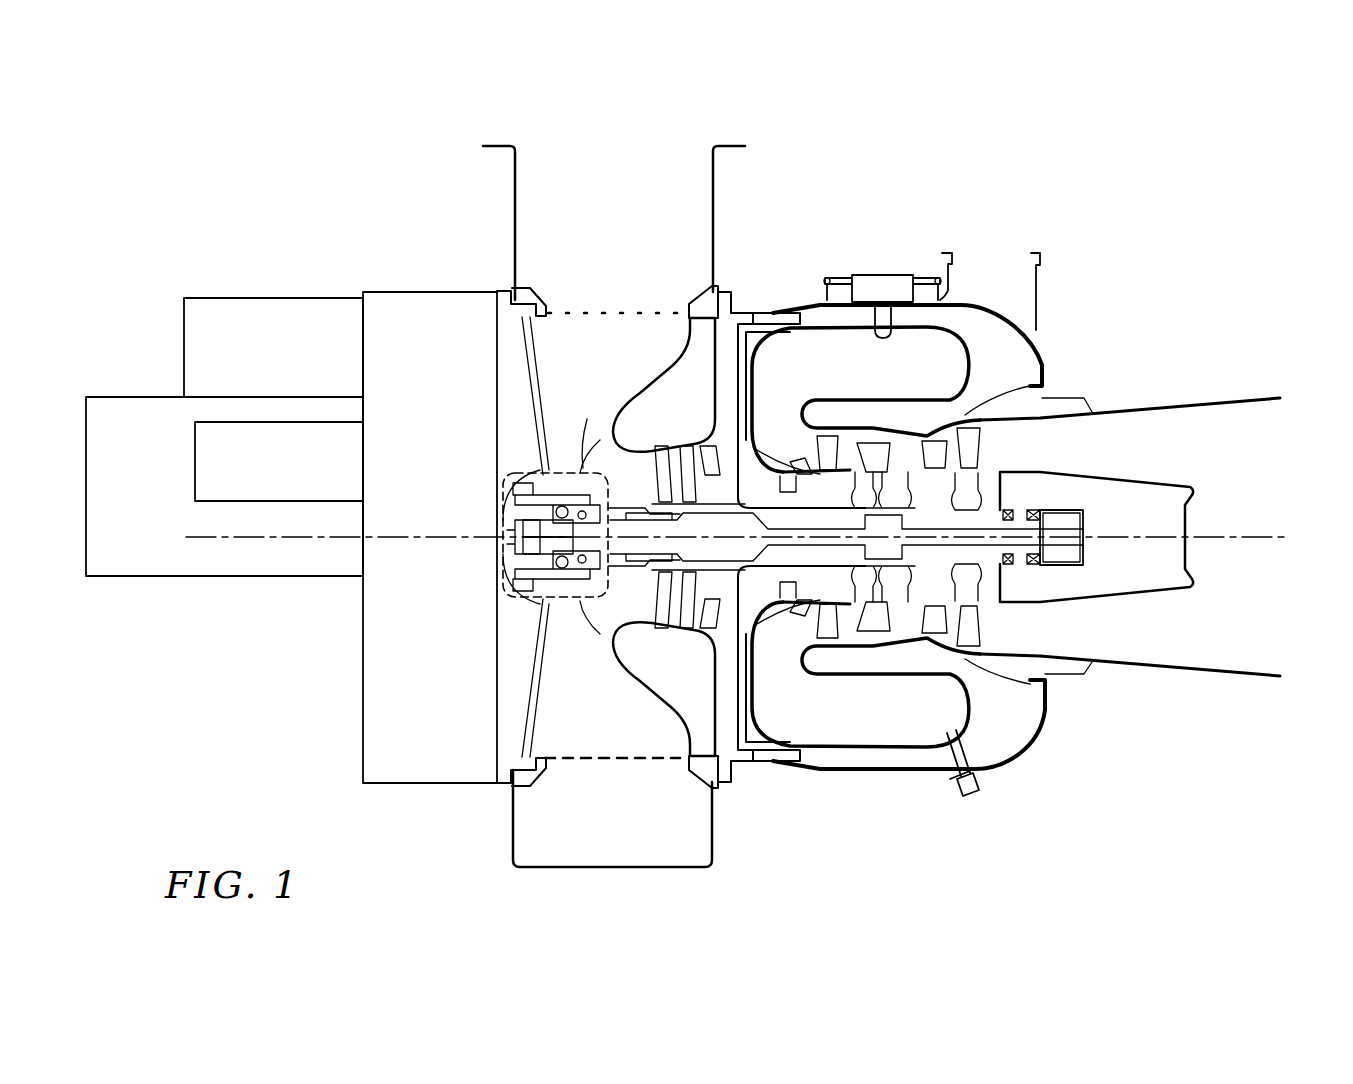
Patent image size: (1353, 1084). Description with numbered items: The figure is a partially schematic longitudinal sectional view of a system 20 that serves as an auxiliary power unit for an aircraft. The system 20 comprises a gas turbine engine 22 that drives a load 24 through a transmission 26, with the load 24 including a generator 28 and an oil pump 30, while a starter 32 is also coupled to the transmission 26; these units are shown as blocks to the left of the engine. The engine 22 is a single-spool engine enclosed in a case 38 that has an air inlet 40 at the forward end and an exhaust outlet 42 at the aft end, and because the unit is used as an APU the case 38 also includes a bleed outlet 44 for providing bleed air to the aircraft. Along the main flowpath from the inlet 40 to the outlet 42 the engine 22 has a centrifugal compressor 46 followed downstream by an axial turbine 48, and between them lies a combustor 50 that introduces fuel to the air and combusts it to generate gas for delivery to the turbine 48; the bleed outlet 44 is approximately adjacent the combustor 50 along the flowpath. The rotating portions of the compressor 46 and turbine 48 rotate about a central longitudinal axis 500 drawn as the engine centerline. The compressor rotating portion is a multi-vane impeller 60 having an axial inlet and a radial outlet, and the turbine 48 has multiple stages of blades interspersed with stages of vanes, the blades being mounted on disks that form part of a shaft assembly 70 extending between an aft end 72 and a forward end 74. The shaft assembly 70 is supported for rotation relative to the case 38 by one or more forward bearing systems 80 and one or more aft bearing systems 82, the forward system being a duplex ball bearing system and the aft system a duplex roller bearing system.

The system 20 is at (995, 190).
The gas turbine engine 22 is at (826, 812).
The load 24 is at (293, 272).
The transmission 26 is at (418, 375).
The generator 28 is at (124, 508).
The oil pump 30 is at (265, 478).
The starter 32 is at (228, 365).
The case 38 is at (1077, 766).
The air inlet 40 is at (632, 142).
The exhaust outlet 42 is at (1278, 652).
The bleed outlet 44 is at (1005, 249).
The centrifugal compressor 46 is at (689, 446).
The axial turbine 48 is at (977, 445).
The combustor 50 is at (899, 724).
The multi-vane impeller 60 is at (671, 610).
The shaft assembly 70 is at (966, 519).
The aft end 72 is at (1086, 551).
The forward end 74 is at (512, 580).
The forward bearing system 80 is at (580, 597).
The aft bearing system 82 is at (1064, 501).
The central longitudinal axis 500 is at (1262, 540).